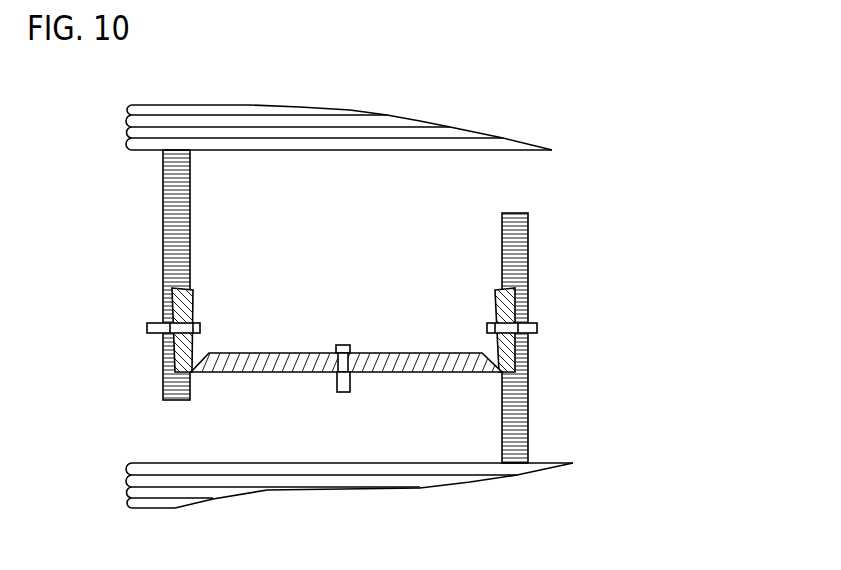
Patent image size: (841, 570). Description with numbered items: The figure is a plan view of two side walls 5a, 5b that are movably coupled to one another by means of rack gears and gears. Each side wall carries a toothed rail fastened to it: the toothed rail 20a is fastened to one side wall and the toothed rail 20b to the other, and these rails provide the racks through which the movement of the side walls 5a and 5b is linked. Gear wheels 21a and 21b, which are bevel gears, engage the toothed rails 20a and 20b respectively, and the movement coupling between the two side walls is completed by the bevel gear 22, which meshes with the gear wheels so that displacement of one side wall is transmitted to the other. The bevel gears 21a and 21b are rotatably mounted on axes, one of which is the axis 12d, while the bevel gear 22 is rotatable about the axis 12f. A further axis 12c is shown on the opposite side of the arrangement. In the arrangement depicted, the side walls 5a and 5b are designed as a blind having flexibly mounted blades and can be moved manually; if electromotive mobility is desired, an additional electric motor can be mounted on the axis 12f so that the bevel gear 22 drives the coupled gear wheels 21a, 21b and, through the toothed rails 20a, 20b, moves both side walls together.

The side wall 5a is at (363, 470).
The side wall 5b is at (370, 140).
The toothed rail 20a is at (528, 243).
The toothed rail 20b is at (175, 238).
The gear wheel 21a is at (496, 300).
The gear wheel 21b is at (183, 307).
The fixing pin 12c is at (148, 325).
The axis 12d is at (538, 327).
The axis 12f is at (343, 343).
The bevel gear 22 is at (273, 363).